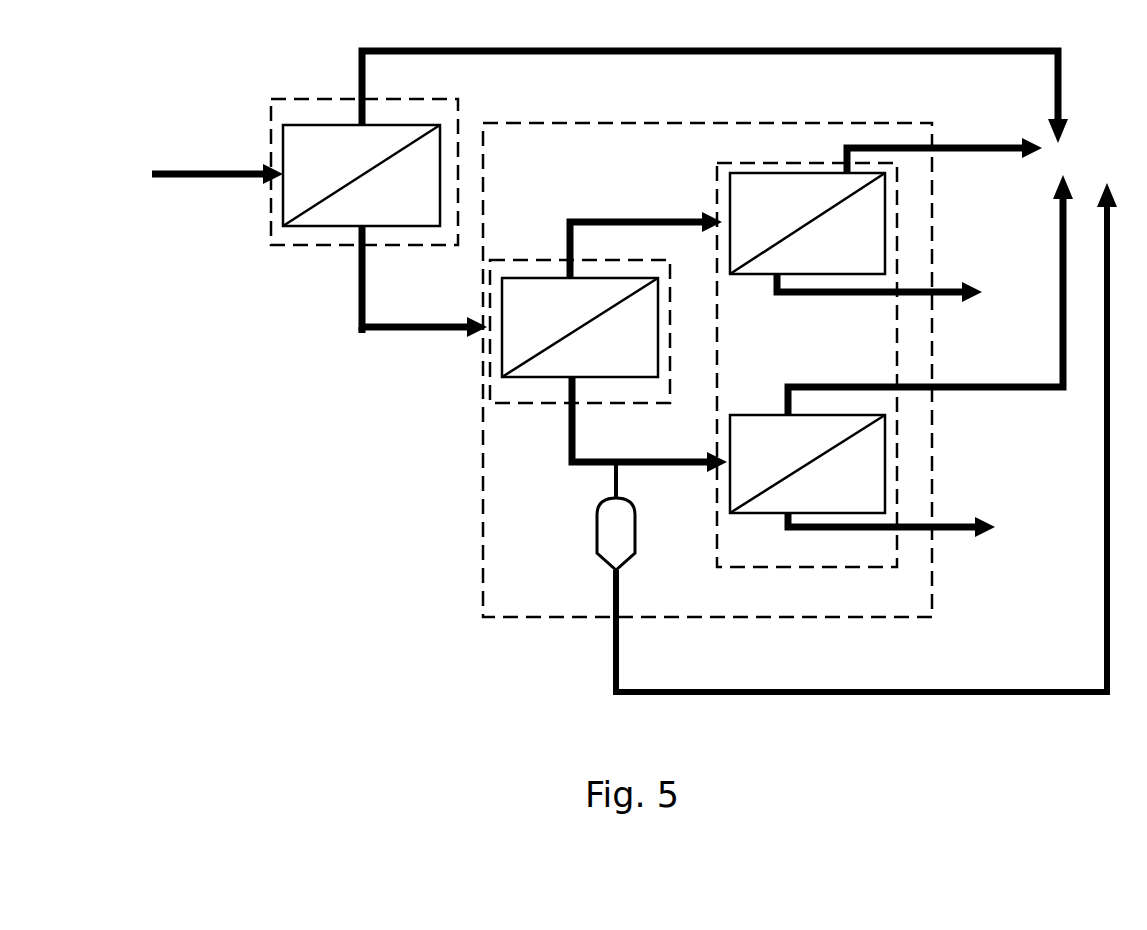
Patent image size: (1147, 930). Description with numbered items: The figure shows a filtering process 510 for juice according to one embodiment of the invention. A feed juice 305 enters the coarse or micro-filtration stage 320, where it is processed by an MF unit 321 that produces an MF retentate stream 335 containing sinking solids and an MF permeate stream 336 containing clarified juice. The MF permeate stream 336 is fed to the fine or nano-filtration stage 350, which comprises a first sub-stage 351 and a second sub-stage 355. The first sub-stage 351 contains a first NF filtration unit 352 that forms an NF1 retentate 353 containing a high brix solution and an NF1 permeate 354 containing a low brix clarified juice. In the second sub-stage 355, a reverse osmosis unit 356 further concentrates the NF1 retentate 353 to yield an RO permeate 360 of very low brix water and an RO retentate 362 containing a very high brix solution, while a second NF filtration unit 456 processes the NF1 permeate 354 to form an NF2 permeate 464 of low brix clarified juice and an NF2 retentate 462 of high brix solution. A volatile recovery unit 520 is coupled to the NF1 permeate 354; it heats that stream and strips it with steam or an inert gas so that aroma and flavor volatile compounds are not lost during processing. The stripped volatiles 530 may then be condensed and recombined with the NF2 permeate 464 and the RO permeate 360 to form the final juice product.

The feed juice 305 is at (217, 157).
The coarse or micro-filtration stage 320 is at (364, 190).
The MF unit 321 is at (361, 175).
The MF retentate stream 335 is at (738, 97).
The MF permeate stream 336 is at (424, 297).
The nano-filtration stage 350 is at (716, 382).
The first sub-stage 351 is at (601, 333).
The first NF filtration unit 352 is at (580, 327).
The NF1 retentate 353 is at (646, 235).
The NF1 permeate 354 is at (649, 424).
The second sub-stage 355 is at (809, 382).
The reverse osmosis unit 356 is at (807, 223).
The RO permeate 360 is at (944, 146).
The RO retentate 362 is at (890, 301).
The second NF filtration unit 456 is at (807, 464).
The NF2 retentate 462 is at (902, 537).
The NF2 permeate 464 is at (930, 296).
The filtering process 510 is at (366, 689).
The volatile recovery unit 520 is at (595, 516).
The stripped volatiles 530 is at (866, 437).